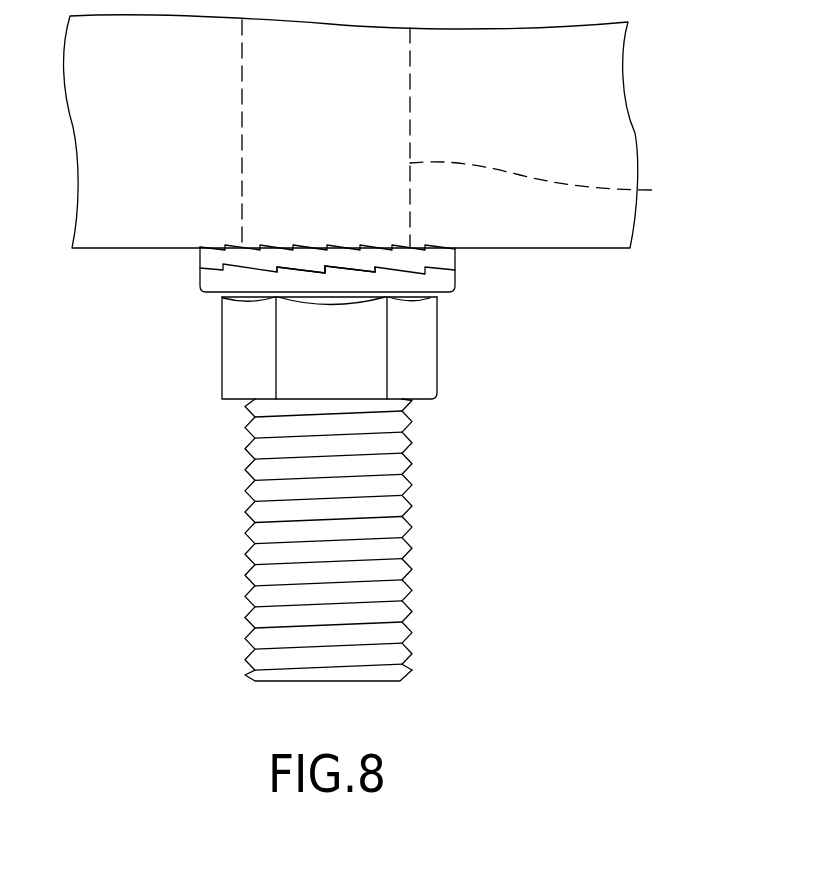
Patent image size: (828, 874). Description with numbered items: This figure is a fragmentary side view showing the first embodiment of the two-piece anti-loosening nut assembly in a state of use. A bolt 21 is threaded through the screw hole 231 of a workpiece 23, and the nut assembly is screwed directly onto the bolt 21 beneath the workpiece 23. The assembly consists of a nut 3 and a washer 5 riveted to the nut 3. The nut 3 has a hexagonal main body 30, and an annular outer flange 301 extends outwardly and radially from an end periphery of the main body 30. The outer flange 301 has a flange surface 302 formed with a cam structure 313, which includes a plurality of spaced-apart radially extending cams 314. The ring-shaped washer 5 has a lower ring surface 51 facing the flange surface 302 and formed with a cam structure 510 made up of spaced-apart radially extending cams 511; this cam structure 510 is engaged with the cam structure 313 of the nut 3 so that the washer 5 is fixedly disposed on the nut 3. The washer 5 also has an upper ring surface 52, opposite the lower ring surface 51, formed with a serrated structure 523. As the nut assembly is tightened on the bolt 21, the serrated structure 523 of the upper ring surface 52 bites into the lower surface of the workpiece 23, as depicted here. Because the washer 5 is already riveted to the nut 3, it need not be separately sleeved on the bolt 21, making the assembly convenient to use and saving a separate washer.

The workpiece 23 is at (587, 108).
The screw hole 231 is at (559, 182).
The washer 5 is at (328, 281).
The upper ring surface 52 is at (278, 246).
The serrated structure 523 is at (249, 263).
The lower ring surface 51 is at (248, 269).
The cam structure 510 is at (269, 302).
The cam 511 is at (282, 267).
The nut 3 is at (347, 349).
The main body 30 is at (347, 349).
The annular outer flange 301 is at (209, 298).
The flange surface 302 is at (440, 298).
The cam structure 313 is at (407, 314).
The cam 314 is at (373, 268).
The bolt 21 is at (386, 549).